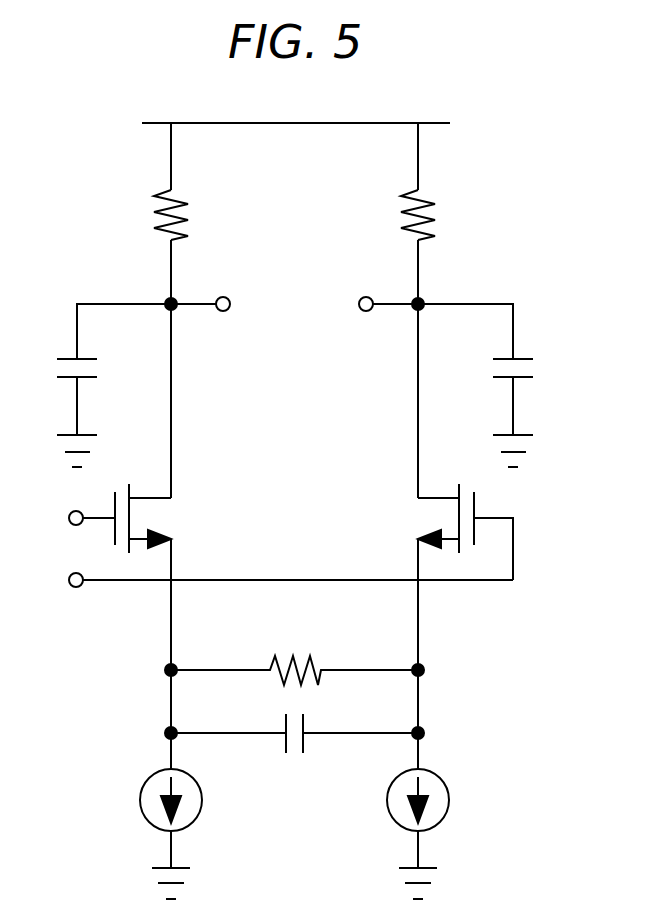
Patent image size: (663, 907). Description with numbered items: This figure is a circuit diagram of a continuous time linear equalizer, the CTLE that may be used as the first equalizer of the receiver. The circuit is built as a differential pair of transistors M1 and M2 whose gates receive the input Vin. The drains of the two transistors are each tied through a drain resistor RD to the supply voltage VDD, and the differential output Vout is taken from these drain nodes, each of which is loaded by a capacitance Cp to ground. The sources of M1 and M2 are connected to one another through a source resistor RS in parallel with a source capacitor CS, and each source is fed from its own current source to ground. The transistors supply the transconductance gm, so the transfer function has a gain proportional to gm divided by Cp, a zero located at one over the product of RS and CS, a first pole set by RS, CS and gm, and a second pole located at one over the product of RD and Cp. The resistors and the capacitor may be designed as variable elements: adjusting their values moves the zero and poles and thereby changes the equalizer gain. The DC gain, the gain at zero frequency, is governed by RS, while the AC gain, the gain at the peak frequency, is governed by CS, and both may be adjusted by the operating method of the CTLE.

The supply voltage VDD is at (316, 125).
The drain resistor RD is at (295, 215).
The capacitor Cp CP is at (295, 385).
The output Vout is at (294, 305).
The first transistor M1 is at (139, 518).
The second transistor M2 is at (446, 532).
The input Vin is at (272, 559).
The source resistor Rs RS is at (294, 655).
The source capacitor Cs CS is at (294, 755).